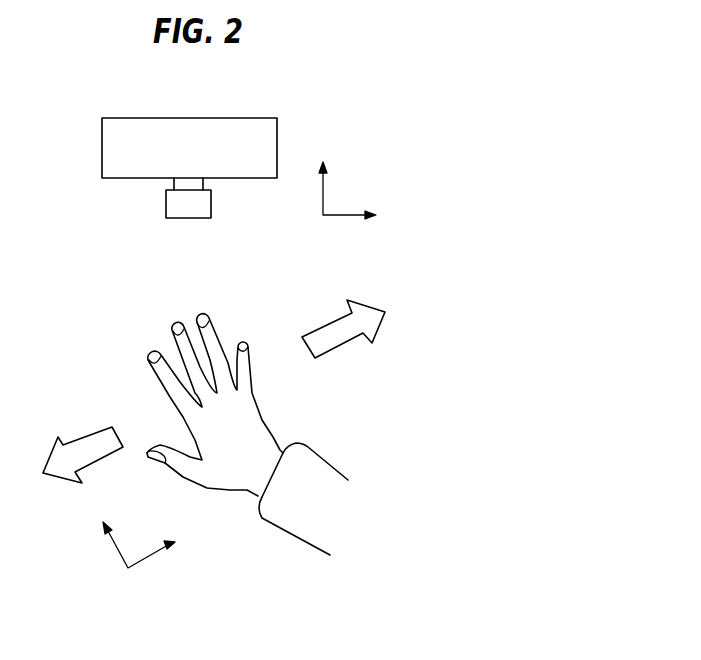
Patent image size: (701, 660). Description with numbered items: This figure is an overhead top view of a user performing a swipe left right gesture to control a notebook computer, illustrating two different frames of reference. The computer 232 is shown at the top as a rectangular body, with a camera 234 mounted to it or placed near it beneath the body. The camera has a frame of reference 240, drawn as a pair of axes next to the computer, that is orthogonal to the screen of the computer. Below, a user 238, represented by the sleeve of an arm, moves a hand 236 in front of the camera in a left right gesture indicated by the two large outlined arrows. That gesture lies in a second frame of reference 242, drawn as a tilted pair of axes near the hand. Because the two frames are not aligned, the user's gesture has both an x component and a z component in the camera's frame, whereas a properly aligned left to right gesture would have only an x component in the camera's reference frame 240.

The computer 232 is at (243, 138).
The camera 234 is at (172, 202).
The hand 236 is at (197, 417).
The user 238 is at (322, 477).
The frame of reference 240 is at (332, 217).
The second frame of reference 242 is at (117, 555).